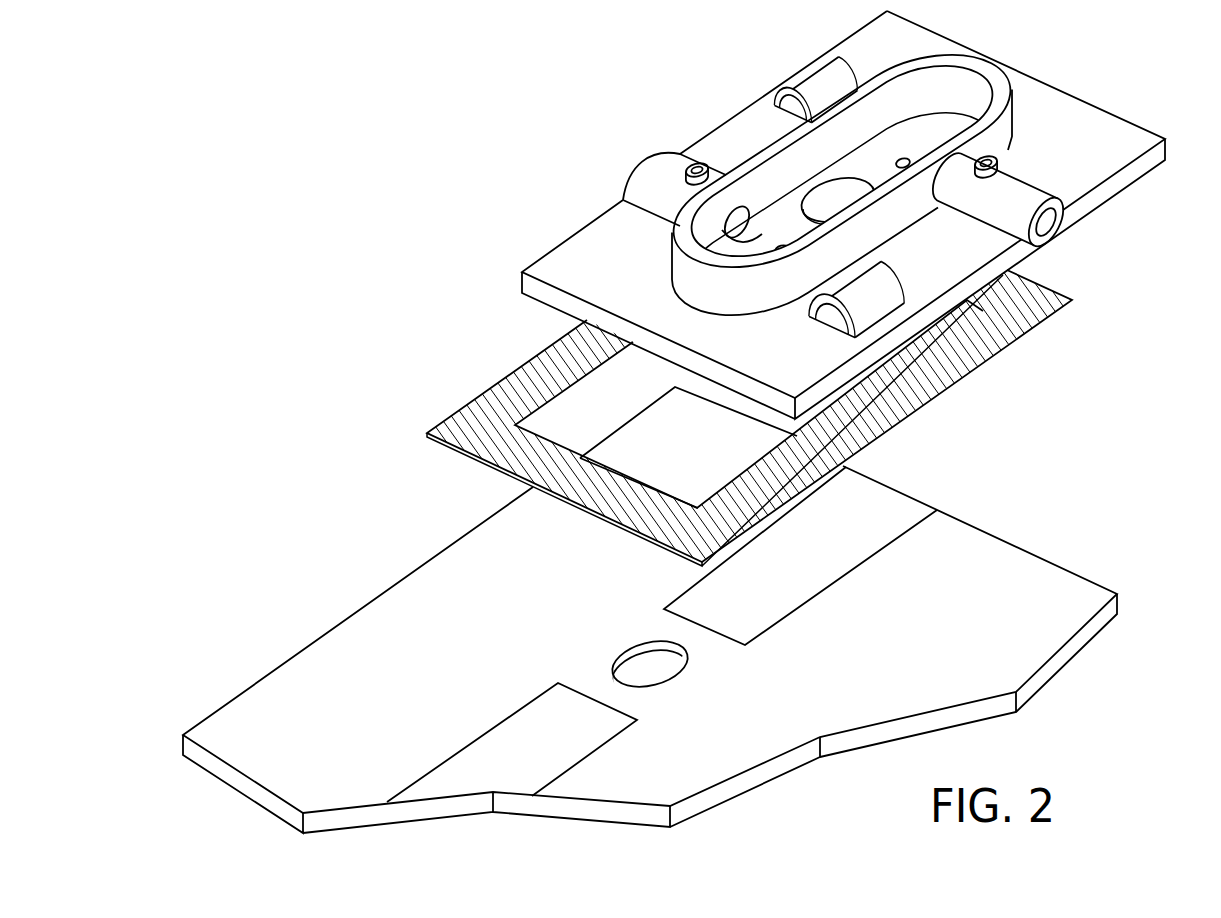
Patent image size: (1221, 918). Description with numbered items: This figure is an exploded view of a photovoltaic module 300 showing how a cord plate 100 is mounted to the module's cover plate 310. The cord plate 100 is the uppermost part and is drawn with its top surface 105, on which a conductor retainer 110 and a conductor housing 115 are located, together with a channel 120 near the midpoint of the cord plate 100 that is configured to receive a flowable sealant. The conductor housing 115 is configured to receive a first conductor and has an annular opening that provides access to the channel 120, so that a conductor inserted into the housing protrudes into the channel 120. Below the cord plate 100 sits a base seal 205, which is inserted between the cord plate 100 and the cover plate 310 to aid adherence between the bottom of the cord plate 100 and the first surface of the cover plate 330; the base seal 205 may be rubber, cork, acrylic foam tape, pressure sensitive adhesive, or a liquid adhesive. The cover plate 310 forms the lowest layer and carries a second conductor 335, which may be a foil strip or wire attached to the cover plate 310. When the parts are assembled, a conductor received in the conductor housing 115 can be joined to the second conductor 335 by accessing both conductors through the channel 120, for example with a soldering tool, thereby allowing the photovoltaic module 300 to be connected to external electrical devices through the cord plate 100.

The photovoltaic module 300 is at (296, 121).
The cord plate 100 is at (723, 114).
The top surface 105 is at (596, 251).
The conductor retainer 110 is at (817, 82).
The conductor housing 115 is at (653, 163).
The channel 120 is at (960, 90).
The base seal 205 is at (486, 376).
The cover plate 310 is at (323, 627).
The first surface of the cover plate 330 is at (328, 685).
The second conductor 335 is at (512, 738).